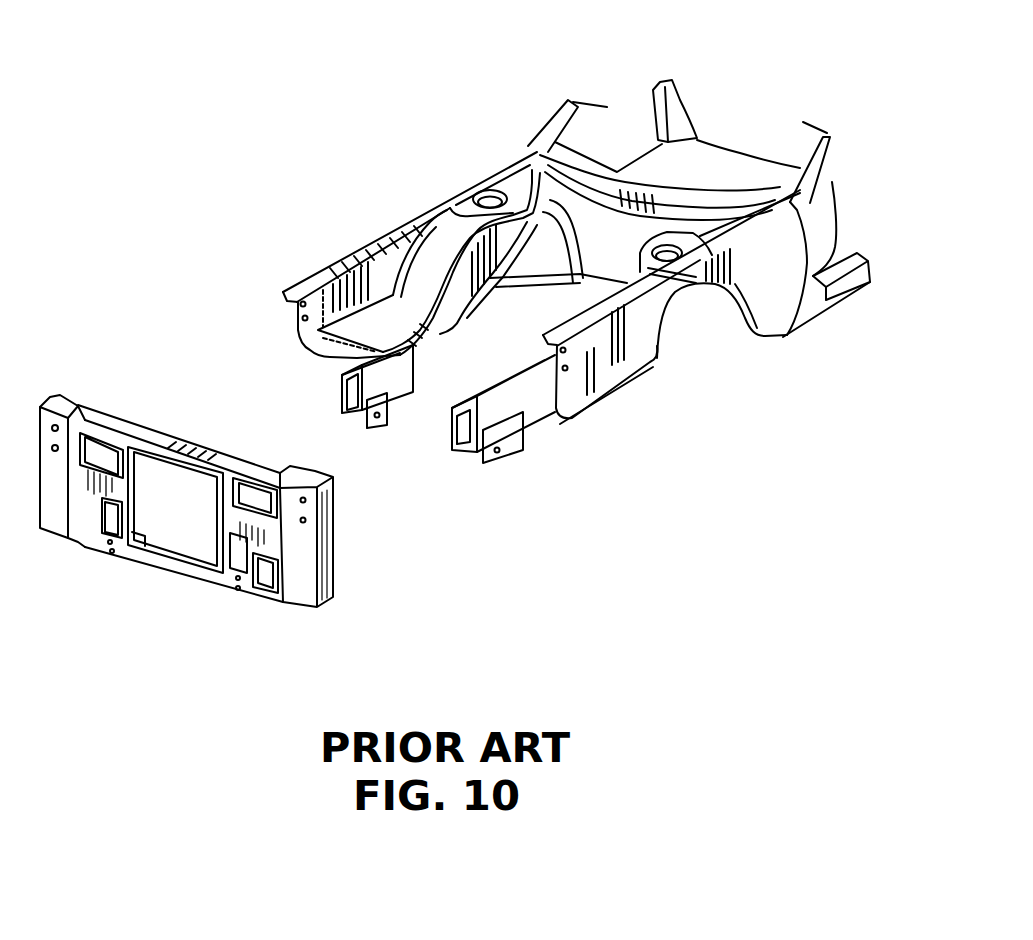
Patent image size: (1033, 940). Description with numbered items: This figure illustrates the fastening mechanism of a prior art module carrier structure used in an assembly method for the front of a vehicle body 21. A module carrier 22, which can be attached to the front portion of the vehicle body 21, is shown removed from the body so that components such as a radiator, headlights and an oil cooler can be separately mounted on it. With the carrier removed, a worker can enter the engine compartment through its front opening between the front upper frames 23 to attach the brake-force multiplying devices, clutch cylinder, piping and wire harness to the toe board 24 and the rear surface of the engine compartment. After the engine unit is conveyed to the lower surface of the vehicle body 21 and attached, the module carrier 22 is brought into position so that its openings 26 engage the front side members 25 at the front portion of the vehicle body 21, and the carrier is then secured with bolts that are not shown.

The vehicle body 21 is at (570, 263).
The module carrier 22 is at (186, 516).
The front upper frame 23 is at (345, 262).
The toe board 24 is at (537, 150).
The front side member 25 is at (340, 360).
The opening 26 is at (113, 520).